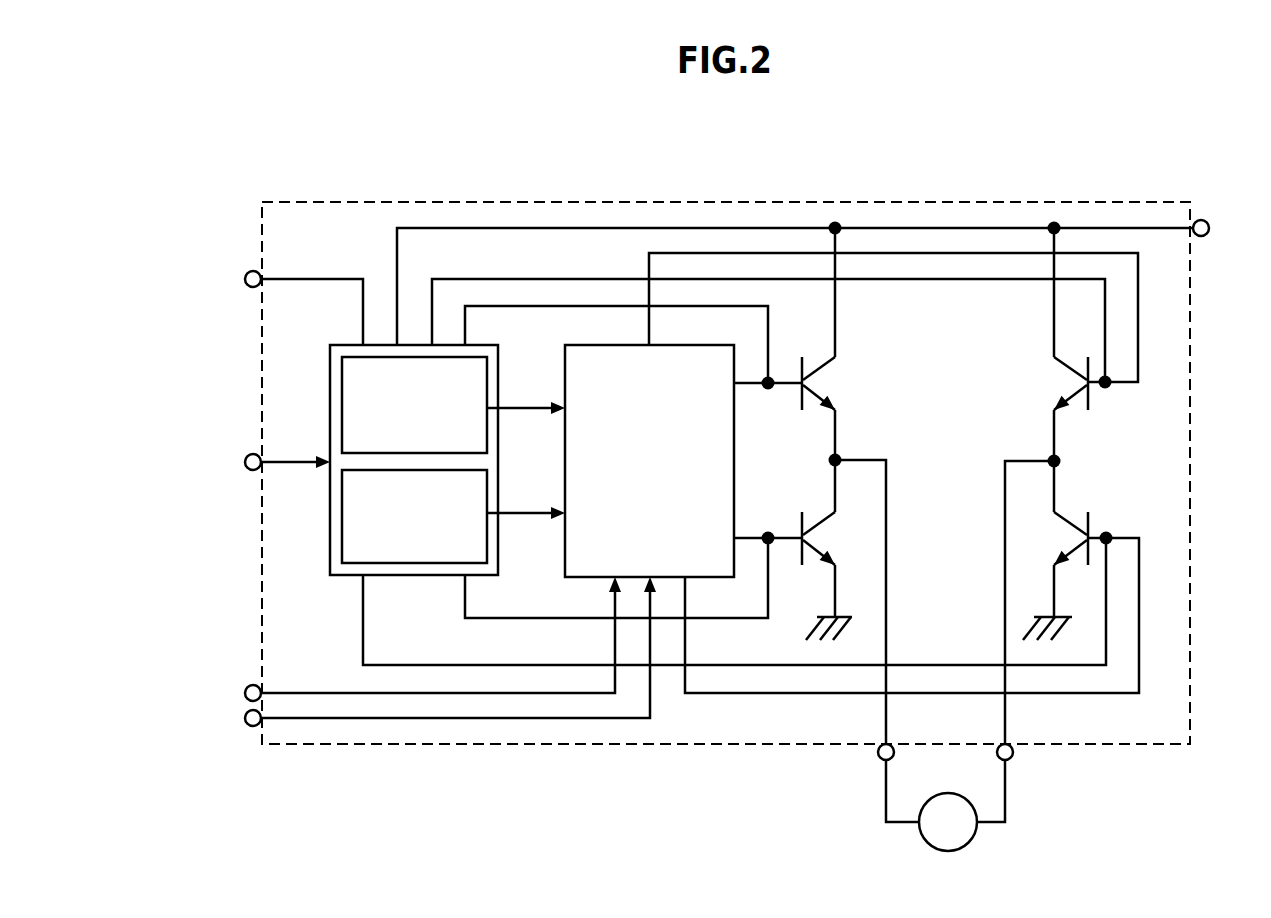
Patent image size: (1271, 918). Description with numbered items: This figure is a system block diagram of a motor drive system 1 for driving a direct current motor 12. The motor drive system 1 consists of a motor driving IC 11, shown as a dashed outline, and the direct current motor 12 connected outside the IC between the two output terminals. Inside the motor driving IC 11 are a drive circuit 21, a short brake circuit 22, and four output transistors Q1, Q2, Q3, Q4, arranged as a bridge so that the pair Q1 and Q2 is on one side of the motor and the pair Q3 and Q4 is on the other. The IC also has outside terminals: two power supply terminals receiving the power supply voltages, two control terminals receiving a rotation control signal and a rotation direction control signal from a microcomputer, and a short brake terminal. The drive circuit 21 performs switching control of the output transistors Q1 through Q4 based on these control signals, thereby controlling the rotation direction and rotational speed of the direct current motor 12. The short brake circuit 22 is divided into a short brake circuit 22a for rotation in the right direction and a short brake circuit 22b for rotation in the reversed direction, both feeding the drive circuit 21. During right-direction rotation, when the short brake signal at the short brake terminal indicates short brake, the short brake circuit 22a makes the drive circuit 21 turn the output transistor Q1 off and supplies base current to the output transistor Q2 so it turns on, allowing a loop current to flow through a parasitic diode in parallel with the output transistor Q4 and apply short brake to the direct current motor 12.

The motor drive system 1 is at (223, 131).
The motor driving IC 11 is at (312, 200).
The direct current motor 12 is at (939, 793).
The drive circuit 21 is at (616, 344).
The short brake circuit 22 is at (330, 380).
The short brake circuit for rotation in the right direction 22a is at (490, 382).
The short brake circuit for rotation in the reversed direction 22b is at (490, 495).
The output transistor Q1 is at (830, 383).
The output transistor Q2 is at (830, 538).
The output transistor Q3 is at (1059, 383).
The output transistor Q4 is at (1058, 538).